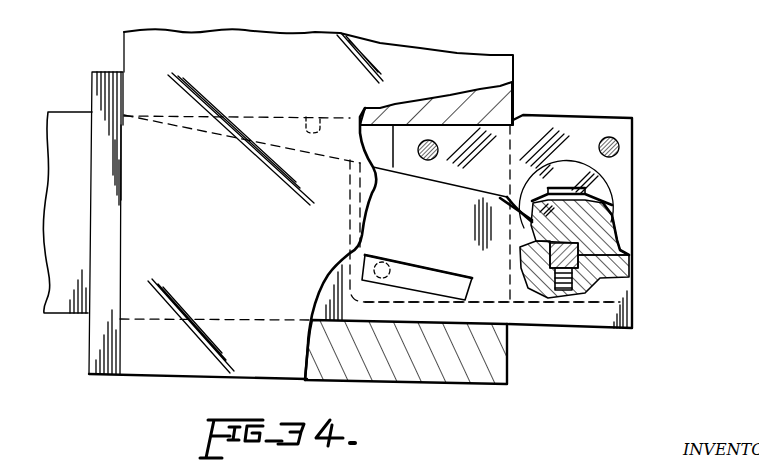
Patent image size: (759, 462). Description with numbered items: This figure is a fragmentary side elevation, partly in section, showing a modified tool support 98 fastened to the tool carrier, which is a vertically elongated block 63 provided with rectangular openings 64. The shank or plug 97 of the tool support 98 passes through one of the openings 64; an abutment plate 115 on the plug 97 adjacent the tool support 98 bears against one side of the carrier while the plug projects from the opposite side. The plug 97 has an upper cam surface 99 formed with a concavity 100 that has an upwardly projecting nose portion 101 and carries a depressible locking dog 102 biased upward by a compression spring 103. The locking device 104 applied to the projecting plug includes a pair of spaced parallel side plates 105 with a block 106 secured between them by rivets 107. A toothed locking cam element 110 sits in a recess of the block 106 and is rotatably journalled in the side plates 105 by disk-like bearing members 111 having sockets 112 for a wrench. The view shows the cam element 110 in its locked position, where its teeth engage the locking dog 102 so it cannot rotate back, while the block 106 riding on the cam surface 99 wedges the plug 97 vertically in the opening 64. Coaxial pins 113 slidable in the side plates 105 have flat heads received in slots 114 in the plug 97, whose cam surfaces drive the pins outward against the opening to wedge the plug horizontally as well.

The block 63 is at (277, 48).
The rectangular openings 64 is at (318, 118).
The shank or plug 97 is at (248, 135).
The tool support 98 is at (70, 112).
The upper cam surface 99 is at (460, 198).
The concavity 100 is at (520, 243).
The nose portion 101 is at (617, 227).
The locking dog 102 is at (580, 254).
The compression spring 103 is at (607, 284).
The locking device 104 is at (617, 112).
The side plates 105 is at (583, 308).
The block 106 is at (612, 173).
The rivets 107 is at (437, 160).
The toothed locking cam element 110 is at (612, 213).
The disk-like bearing members 111 is at (577, 177).
The sockets 112 is at (562, 187).
The coaxial pins 113 is at (398, 283).
The slots 114 is at (433, 283).
The abutment plate 115 is at (110, 67).